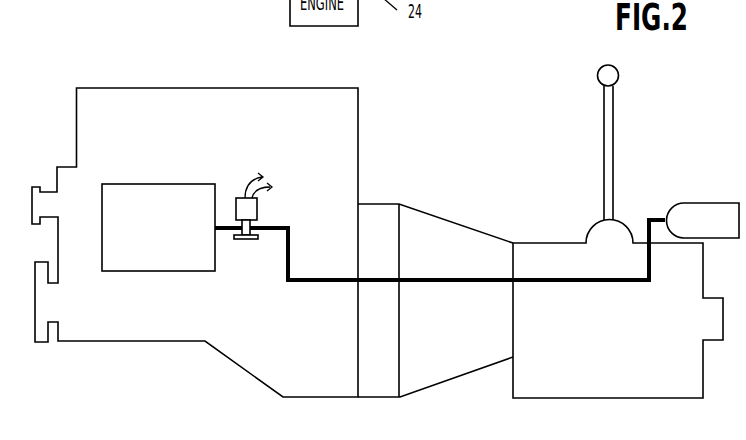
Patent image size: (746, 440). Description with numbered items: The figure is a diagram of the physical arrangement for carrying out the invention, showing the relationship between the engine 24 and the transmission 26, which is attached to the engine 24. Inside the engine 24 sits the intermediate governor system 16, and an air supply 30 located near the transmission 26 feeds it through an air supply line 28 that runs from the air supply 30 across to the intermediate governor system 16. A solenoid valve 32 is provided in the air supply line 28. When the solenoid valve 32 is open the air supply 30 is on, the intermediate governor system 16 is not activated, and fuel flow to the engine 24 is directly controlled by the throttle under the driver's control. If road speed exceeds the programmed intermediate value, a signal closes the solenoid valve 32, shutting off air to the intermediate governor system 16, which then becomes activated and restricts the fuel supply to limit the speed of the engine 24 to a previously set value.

The engine 24 is at (153, 108).
The intermediate governor system 16 is at (215, 271).
The solenoid valve 32 is at (258, 212).
The air supply line 28 is at (468, 283).
The transmission 26 is at (513, 398).
The air supply 30 is at (709, 202).